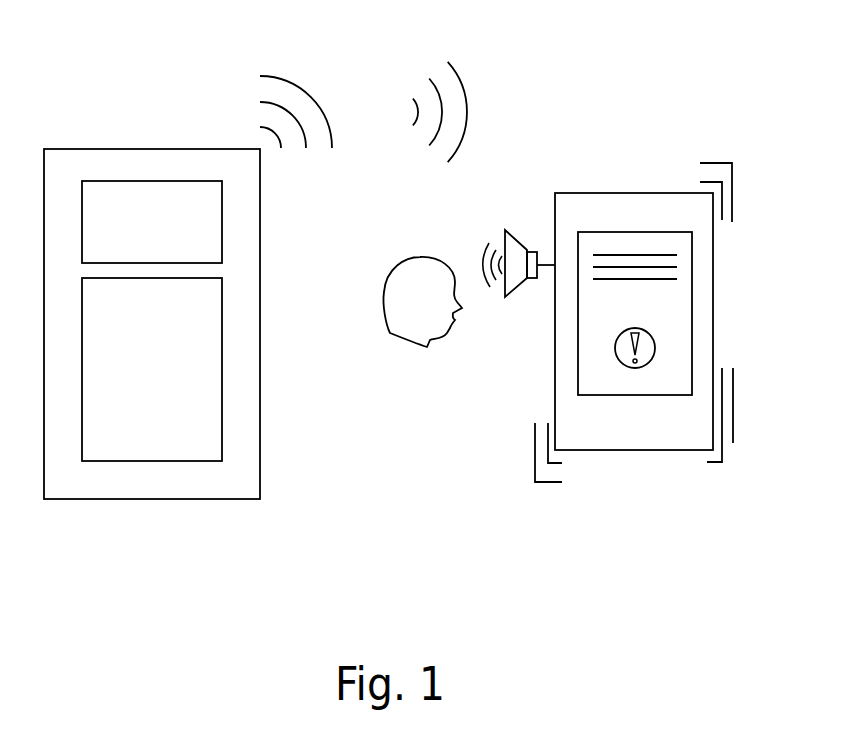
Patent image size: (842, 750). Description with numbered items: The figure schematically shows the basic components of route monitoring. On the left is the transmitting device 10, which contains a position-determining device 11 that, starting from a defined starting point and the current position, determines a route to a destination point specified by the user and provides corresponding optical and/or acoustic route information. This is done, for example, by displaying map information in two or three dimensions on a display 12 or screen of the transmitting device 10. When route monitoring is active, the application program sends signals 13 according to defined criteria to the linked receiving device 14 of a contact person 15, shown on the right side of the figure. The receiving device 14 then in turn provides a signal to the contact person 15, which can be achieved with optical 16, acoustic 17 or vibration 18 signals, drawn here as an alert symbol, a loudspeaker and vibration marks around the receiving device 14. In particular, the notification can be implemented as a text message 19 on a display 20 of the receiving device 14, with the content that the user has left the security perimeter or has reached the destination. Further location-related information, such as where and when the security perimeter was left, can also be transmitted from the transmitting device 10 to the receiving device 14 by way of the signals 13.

The transmitting device 10 is at (194, 500).
The position-determining device 11 is at (158, 195).
The display 12 is at (100, 447).
The signals 13 is at (293, 80).
The receiving device 14 is at (607, 193).
The contact person 15 is at (412, 257).
The optical signal 16 is at (615, 346).
The acoustic signal 17 is at (487, 242).
The vibration signal 18 is at (547, 483).
The text message 19 is at (677, 267).
The display 20 is at (617, 396).